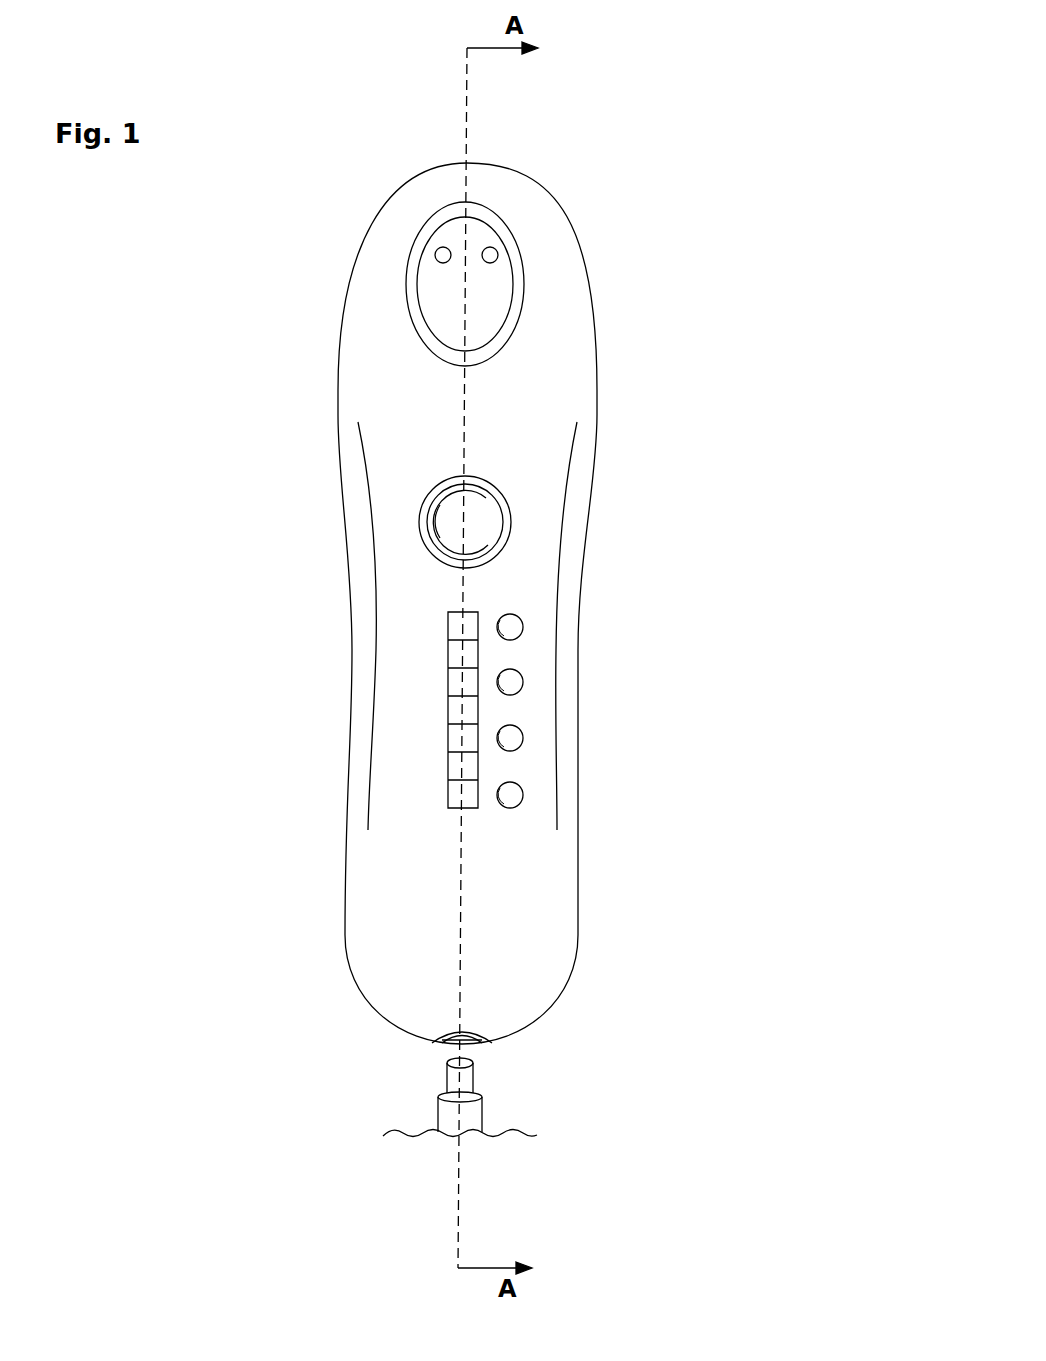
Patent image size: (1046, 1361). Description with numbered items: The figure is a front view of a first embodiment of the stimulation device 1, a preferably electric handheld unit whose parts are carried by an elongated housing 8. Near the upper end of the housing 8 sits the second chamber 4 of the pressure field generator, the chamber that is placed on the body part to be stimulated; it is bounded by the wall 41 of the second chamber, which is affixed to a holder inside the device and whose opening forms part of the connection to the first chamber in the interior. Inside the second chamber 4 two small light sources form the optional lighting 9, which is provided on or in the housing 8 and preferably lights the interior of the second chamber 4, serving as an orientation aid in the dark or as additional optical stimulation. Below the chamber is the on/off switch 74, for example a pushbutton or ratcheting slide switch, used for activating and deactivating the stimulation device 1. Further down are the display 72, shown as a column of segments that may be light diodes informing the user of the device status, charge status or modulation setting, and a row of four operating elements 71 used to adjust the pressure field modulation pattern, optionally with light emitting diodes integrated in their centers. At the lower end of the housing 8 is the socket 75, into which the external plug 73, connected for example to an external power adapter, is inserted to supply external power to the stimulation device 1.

The stimulation device 1 is at (610, 209).
The housing 8 is at (368, 352).
The lighting 9 is at (435, 256).
The second chamber 4 is at (468, 305).
The wall of the second chamber 41 is at (503, 342).
The on/off switch 74 is at (474, 522).
The display 72 is at (455, 738).
The operating elements 71 is at (512, 627).
The socket 75 is at (446, 1048).
The external plug 73 is at (460, 1118).